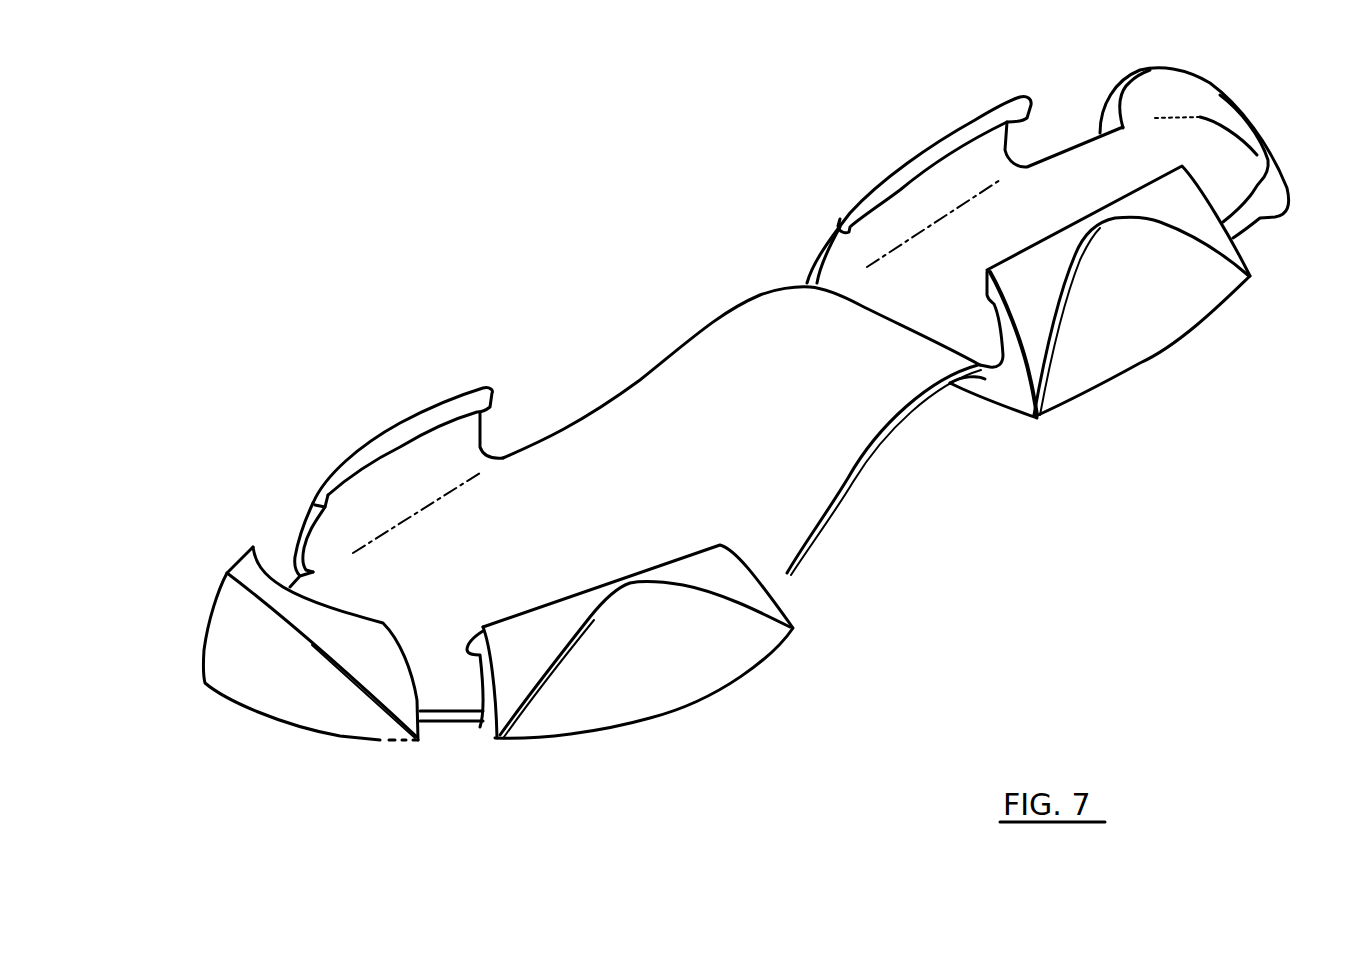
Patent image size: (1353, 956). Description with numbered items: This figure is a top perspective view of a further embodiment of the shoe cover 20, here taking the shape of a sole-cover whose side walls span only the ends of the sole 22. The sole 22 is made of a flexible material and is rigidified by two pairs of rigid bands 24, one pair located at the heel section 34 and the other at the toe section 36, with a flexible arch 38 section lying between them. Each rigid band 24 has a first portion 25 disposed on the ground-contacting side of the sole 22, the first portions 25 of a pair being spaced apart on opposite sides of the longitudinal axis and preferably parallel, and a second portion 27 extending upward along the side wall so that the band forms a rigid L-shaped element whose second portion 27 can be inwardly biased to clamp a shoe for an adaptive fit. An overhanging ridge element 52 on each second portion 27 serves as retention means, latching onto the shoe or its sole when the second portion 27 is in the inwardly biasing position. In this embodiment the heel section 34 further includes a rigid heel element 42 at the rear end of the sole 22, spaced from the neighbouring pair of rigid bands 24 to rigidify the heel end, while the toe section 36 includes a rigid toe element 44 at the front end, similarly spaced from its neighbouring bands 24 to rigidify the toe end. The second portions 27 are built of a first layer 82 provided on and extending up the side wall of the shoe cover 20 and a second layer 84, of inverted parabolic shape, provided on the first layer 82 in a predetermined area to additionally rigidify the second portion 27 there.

The shoe cover 20 is at (541, 160).
The sole 22 is at (802, 573).
The rigid bands 24 is at (290, 514).
The first portion 25 is at (977, 388).
The second portion 27 is at (400, 477).
The heel section 34 is at (1334, 340).
The toe section 36 is at (390, 280).
The arch section 38 is at (1107, 510).
The rigid heel element 42 is at (1264, 114).
The rigid toe element 44 is at (280, 703).
The overhanging ridge element 52 is at (493, 407).
The first layer 82 is at (1195, 227).
The second layer 84 is at (1193, 300).